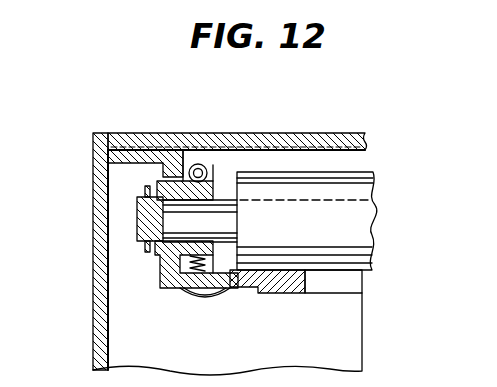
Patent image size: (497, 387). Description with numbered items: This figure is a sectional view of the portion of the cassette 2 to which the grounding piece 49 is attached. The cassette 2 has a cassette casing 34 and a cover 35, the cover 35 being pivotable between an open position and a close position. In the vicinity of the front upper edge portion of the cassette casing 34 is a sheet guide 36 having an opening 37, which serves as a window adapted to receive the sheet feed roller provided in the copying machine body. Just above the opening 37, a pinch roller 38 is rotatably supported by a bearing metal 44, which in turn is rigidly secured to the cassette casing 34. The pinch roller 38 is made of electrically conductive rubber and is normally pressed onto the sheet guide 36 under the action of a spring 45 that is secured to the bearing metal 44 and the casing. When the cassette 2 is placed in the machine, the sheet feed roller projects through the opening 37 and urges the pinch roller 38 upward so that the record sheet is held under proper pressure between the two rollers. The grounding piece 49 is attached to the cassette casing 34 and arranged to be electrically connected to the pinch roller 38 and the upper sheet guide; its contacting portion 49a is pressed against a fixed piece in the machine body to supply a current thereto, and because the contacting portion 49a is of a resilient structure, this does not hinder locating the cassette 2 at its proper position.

The cassette 2 is at (195, 230).
The cassette casing 34 is at (97, 227).
The cover 35 is at (179, 118).
The bearing metal 44 is at (193, 182).
The spring 45 is at (206, 167).
The pinch roller 38 is at (357, 228).
The opening 37 is at (343, 284).
The sheet guide 36 is at (285, 287).
The grounding piece 49 is at (155, 279).
The contacting portion 49a is at (207, 298).